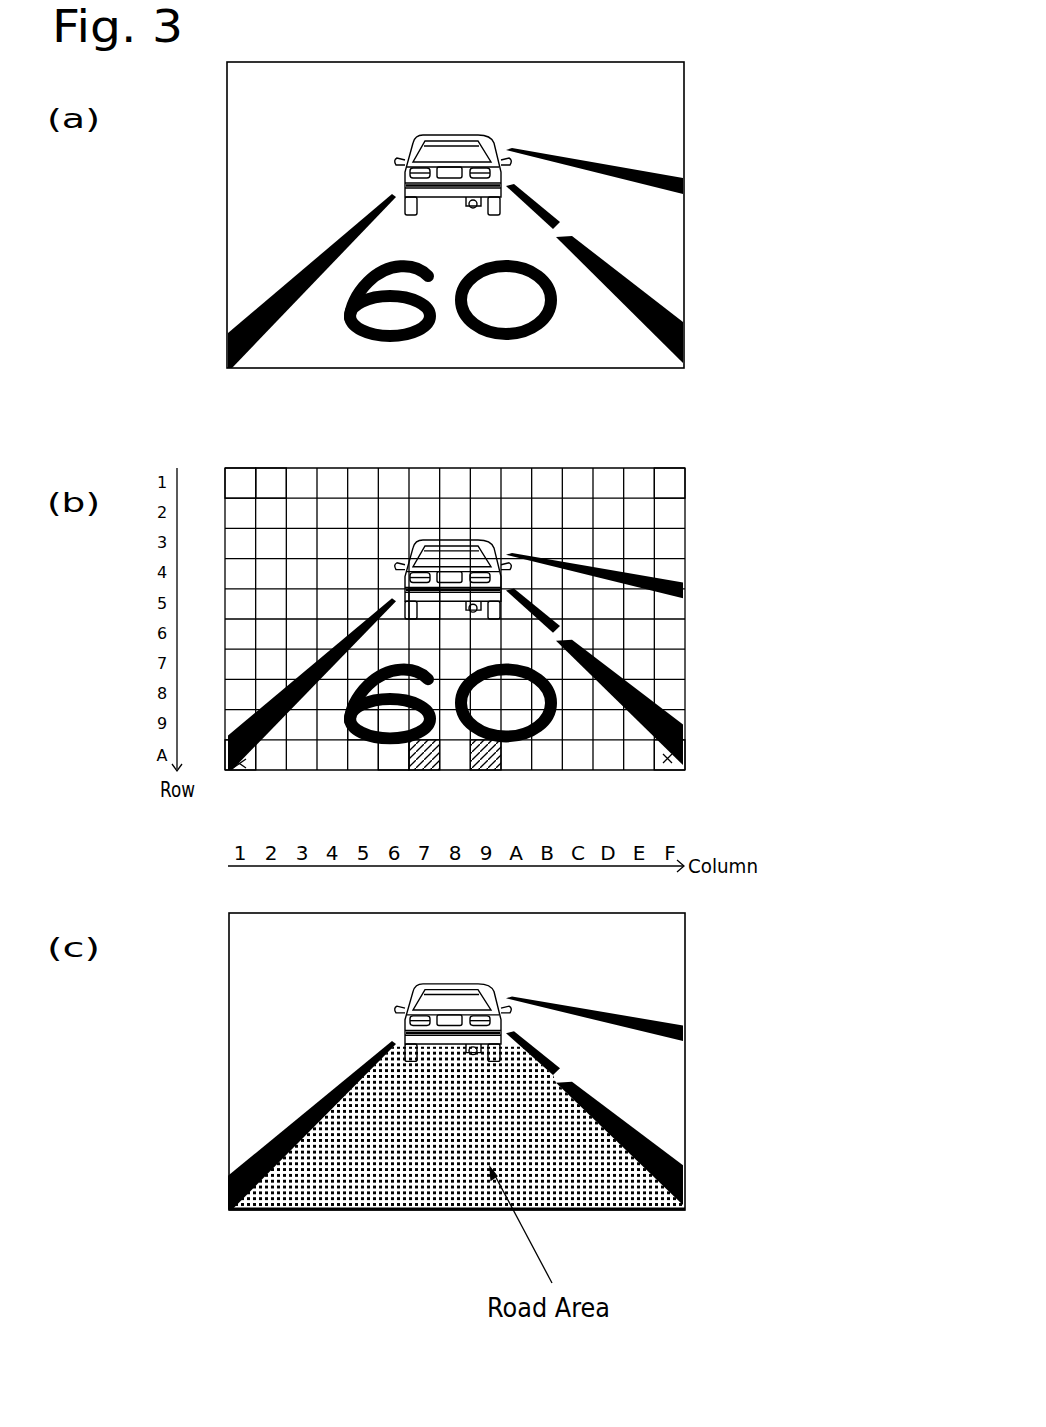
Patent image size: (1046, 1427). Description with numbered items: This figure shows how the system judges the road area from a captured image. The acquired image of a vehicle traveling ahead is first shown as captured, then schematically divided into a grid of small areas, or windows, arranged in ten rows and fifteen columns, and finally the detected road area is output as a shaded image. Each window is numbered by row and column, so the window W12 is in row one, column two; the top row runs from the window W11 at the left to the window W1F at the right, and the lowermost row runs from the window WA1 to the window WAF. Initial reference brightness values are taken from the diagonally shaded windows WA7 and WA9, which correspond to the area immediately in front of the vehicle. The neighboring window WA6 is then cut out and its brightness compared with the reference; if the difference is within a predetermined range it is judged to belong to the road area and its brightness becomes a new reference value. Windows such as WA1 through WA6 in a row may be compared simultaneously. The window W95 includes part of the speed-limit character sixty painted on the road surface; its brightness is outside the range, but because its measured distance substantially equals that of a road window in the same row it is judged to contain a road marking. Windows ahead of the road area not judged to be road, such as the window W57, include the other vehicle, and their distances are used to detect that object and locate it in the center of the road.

The window in row 1, column 1 W11 is at (242, 487).
The window in row 1, column 2 W12 is at (267, 480).
The window in row 1, column F W1F is at (667, 487).
The window in row 5, column 7 W57 is at (430, 612).
The window in row A, column 1 WA1 is at (228, 753).
The window in row 9, column 5 W95 is at (368, 720).
The window in row A, column 6 WA6 is at (395, 758).
The window in row A, column 7 WA7 is at (422, 770).
The window in row A, column 9 WA9 is at (495, 768).
The window in row A, column F WAF is at (687, 748).